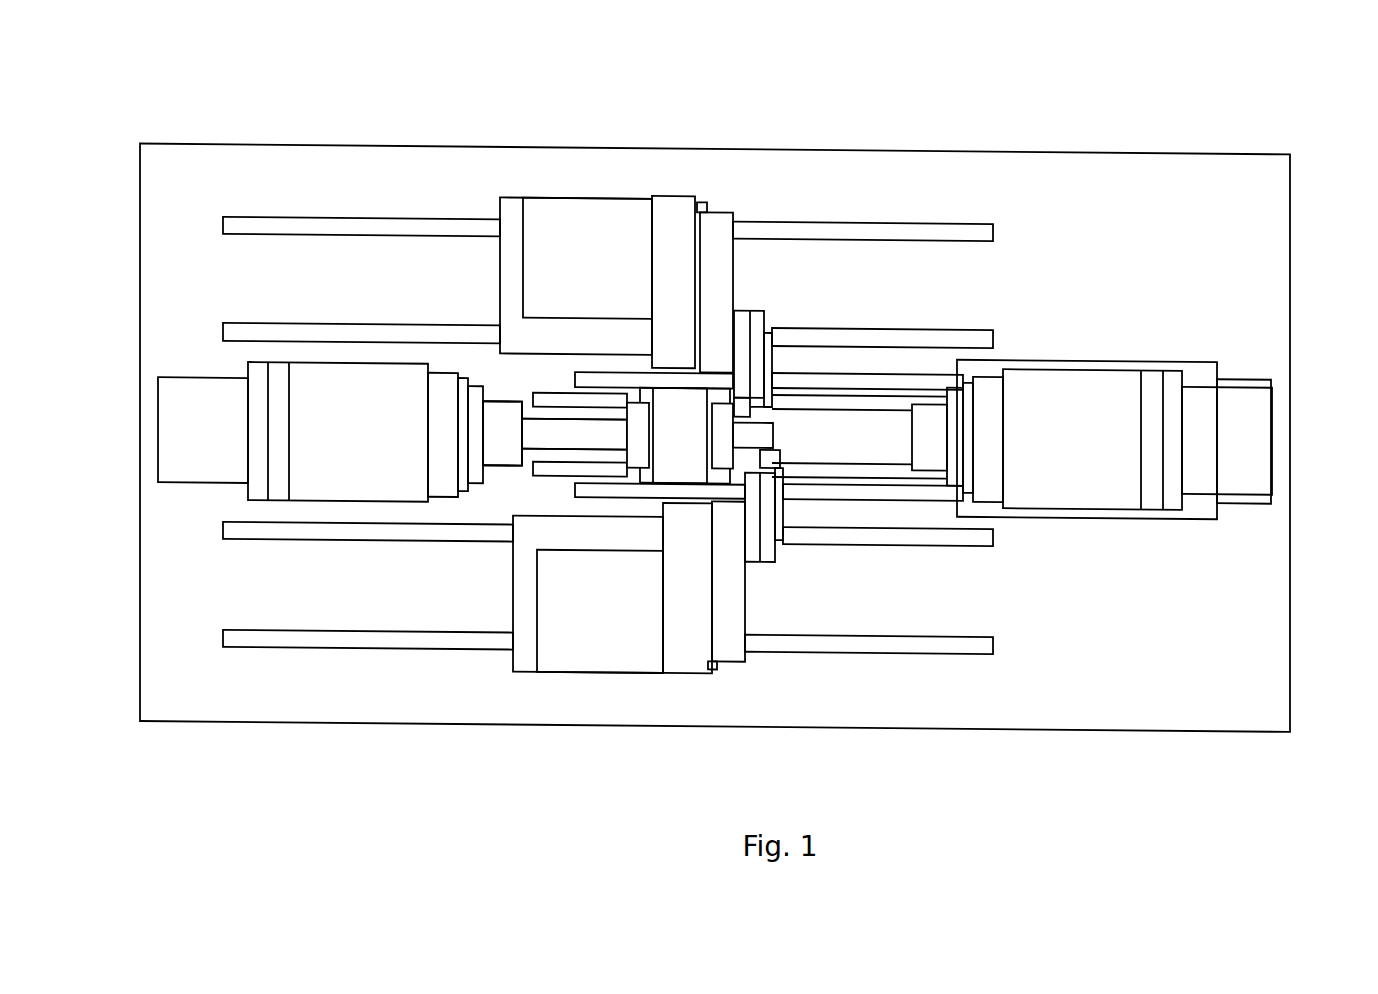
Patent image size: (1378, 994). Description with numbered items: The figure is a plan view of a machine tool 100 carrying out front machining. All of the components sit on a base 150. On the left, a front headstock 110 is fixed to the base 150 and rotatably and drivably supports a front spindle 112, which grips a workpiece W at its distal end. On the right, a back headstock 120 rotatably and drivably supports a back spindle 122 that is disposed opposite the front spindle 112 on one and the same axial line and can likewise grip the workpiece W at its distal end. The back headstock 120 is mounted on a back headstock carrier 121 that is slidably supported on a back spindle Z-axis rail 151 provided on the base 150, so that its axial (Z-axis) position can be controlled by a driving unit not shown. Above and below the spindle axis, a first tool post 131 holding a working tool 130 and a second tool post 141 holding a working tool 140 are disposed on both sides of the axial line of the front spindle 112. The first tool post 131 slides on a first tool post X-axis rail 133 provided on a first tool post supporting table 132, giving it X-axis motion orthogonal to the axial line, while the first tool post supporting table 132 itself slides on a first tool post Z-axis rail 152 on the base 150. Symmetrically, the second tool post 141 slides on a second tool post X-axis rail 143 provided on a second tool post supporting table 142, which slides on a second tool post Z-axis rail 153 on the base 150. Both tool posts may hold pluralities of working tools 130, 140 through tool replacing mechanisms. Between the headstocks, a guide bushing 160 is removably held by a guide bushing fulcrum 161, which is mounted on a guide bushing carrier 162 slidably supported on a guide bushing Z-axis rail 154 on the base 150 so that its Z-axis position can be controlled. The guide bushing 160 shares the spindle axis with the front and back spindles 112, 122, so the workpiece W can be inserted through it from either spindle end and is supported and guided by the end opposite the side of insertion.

The machine tool 100 is at (195, 58).
The front headstock 110 is at (318, 473).
The front spindle 112 is at (503, 457).
The back headstock 120 is at (1097, 388).
The back headstock carrier 121 is at (1200, 507).
The back spindle 122 is at (932, 455).
The working tool 130 is at (755, 412).
The first tool post 131 is at (727, 222).
The first tool post supporting table 132 is at (583, 215).
The first tool post X-axis rail 133 is at (702, 203).
The working tool 140 is at (767, 457).
The second tool post 141 is at (723, 640).
The second tool post supporting table 142 is at (597, 643).
The second tool post X-axis rail 143 is at (712, 667).
The base 150 is at (1195, 172).
The back spindle Z-axis rail 151 is at (878, 495).
The first tool post Z-axis rail 152 is at (353, 335).
The second tool post Z-axis rail 153 is at (353, 530).
The guide bushing Z-axis rail 154 is at (570, 467).
The guide bushing 160 is at (722, 417).
The guide bushing fulcrum 161 is at (677, 407).
The guide bushing carrier 162 is at (640, 318).
The workpiece W is at (545, 437).